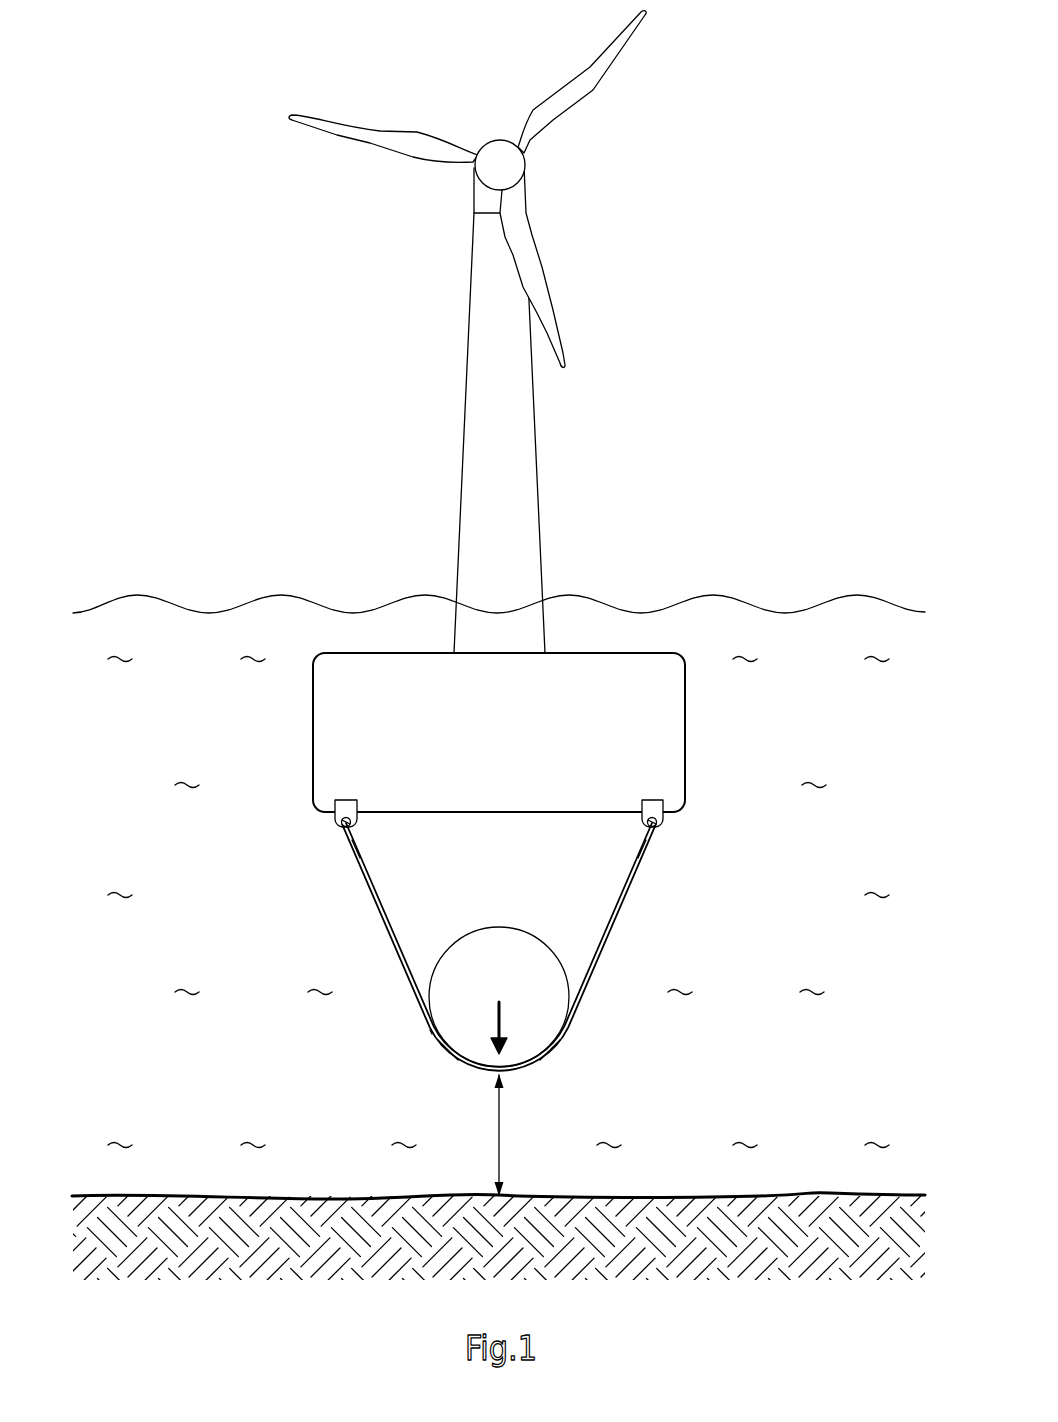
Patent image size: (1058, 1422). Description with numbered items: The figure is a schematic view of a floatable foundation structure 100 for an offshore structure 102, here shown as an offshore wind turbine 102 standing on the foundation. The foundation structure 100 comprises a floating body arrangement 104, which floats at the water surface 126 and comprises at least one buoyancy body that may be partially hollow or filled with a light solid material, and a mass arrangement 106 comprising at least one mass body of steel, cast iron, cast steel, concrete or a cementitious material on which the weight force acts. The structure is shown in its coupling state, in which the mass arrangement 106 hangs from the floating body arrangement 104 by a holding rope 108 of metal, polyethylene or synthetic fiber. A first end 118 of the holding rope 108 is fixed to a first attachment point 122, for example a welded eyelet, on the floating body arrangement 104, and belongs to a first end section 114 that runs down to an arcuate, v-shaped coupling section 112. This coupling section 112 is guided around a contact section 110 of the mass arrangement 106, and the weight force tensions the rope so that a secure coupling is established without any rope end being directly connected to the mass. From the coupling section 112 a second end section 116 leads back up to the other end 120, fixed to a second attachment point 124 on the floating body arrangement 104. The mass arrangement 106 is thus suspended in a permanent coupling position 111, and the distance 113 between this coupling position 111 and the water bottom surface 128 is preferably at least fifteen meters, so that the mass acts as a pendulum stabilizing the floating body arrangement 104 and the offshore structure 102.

The floatable foundation structure 100 is at (753, 730).
The offshore structure 102 is at (680, 172).
The floating body arrangement 104 is at (324, 737).
The mass arrangement 106 is at (485, 940).
The holding rope 108 is at (610, 923).
The contact section 110 is at (555, 1060).
The coupling position 111 is at (382, 1029).
The coupling section 112 is at (447, 1060).
The distance 113 is at (502, 1133).
The first end section 114 is at (323, 860).
The second end section 116 is at (675, 860).
The first end 118 is at (337, 827).
The other end 120 is at (661, 827).
The first attachment point 122 is at (347, 805).
The second attachment point 124 is at (652, 805).
The water surface 126 is at (713, 595).
The water bottom surface 128 is at (800, 1195).